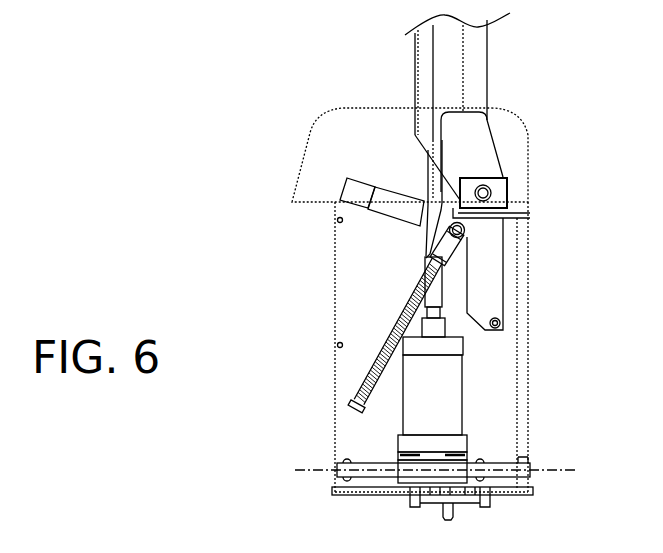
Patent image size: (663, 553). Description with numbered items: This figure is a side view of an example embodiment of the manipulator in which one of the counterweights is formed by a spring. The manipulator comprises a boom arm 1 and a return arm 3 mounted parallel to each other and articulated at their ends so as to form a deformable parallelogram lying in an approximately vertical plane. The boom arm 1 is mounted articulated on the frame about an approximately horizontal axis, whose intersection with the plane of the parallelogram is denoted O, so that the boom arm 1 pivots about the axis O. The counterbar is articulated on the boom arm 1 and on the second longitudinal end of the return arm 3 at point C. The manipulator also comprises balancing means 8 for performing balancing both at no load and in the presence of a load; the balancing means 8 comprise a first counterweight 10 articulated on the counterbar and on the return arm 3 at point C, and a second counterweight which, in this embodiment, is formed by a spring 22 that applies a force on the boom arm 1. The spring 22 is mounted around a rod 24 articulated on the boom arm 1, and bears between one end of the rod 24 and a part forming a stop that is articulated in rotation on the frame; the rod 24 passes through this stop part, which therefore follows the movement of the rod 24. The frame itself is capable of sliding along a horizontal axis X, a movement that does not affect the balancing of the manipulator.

The boom arm 1 is at (481, 147).
The horizontal rotation axis O is at (491, 193).
The return arm 3 is at (430, 170).
The point C is at (465, 238).
The first counterweight 10 is at (457, 347).
The balancing means 8 is at (473, 387).
The spring 22 is at (408, 310).
The rod 24 is at (373, 375).
The horizontal axis X is at (305, 468).